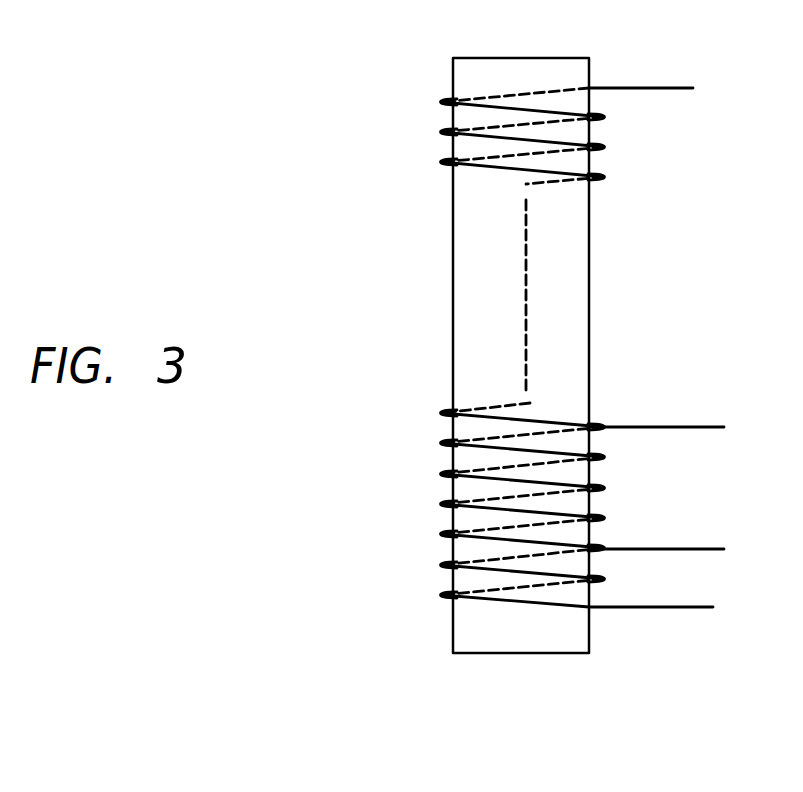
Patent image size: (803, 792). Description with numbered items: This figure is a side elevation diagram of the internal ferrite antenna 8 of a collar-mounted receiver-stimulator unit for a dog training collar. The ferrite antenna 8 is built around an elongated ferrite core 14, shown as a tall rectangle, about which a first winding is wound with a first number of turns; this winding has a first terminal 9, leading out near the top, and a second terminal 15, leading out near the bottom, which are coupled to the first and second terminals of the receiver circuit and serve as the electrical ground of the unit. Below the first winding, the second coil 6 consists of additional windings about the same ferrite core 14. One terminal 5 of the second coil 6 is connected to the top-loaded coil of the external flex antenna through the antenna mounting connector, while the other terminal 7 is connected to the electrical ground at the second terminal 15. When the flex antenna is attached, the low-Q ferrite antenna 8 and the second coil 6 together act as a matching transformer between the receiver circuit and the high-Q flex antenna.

The terminal 5 is at (678, 427).
The second coil 6 is at (430, 436).
The other terminal of coil 7 is at (693, 549).
The ferrite antenna 8 is at (347, 48).
The first terminal 9 is at (647, 88).
The ferrite core 14 is at (524, 642).
The second terminal 15 is at (655, 607).